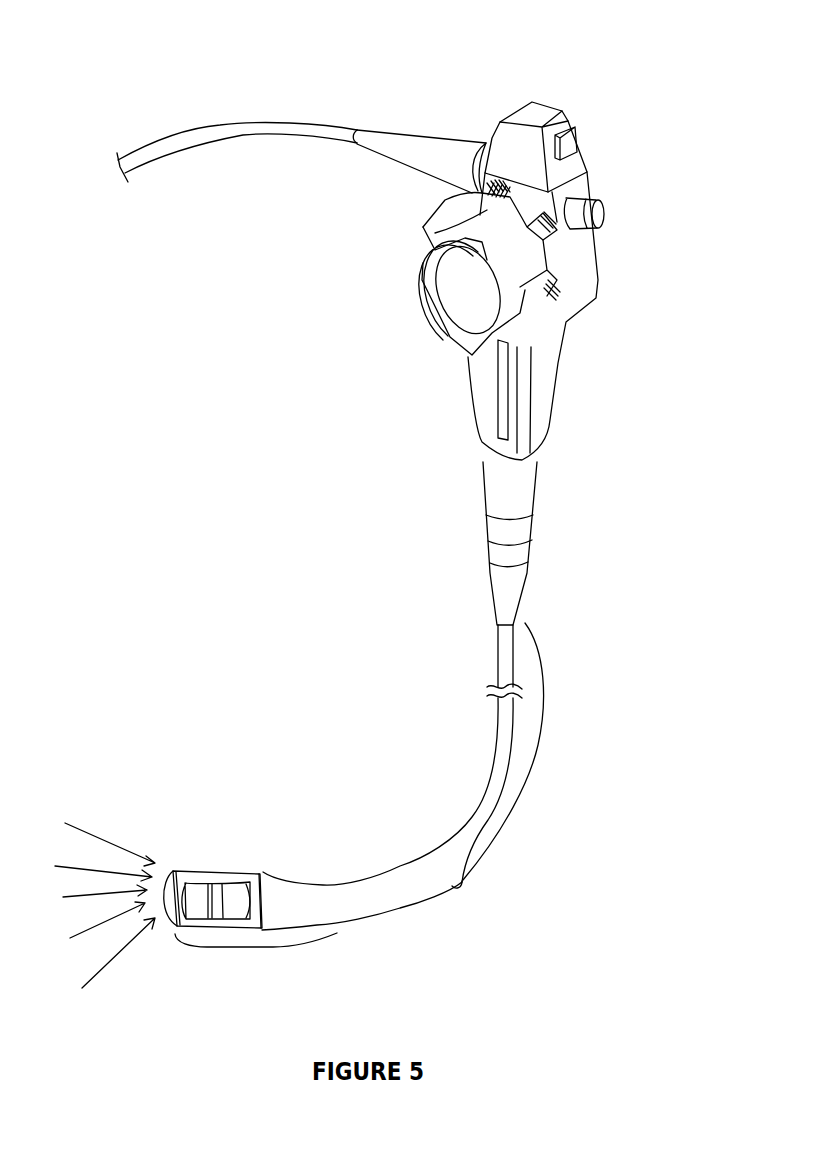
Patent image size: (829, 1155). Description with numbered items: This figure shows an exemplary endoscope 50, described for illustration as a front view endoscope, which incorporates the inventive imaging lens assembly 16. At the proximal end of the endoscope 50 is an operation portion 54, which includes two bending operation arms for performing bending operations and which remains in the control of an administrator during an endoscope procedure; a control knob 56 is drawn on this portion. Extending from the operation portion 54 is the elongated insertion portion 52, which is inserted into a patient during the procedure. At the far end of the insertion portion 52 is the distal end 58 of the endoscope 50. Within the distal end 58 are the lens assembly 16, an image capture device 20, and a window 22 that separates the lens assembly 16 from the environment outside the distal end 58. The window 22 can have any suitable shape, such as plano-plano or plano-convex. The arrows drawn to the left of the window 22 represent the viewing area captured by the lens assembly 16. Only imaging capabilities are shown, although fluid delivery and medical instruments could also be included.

The endoscope 50 is at (606, 114).
The operation portion 54 is at (595, 113).
The control knob 56 is at (420, 267).
The elongated insertion portion 52 is at (403, 696).
The lens assembly 16 is at (257, 872).
The image capture device 20 is at (263, 876).
The window 22 is at (172, 923).
The distal end 58 is at (168, 865).